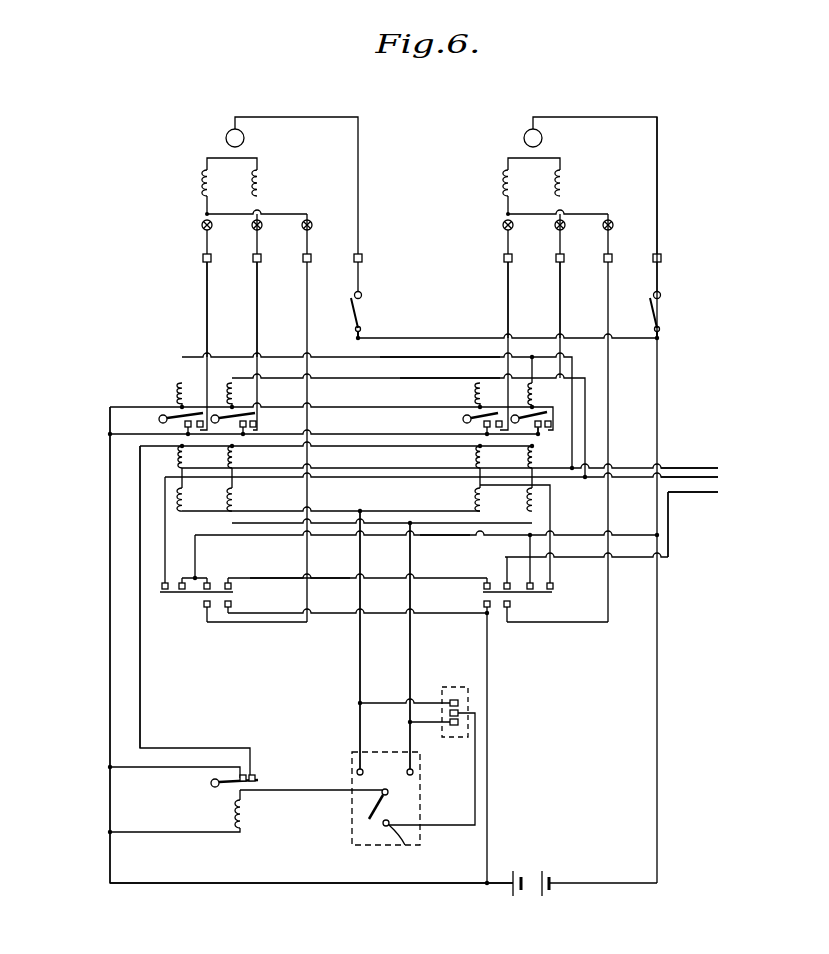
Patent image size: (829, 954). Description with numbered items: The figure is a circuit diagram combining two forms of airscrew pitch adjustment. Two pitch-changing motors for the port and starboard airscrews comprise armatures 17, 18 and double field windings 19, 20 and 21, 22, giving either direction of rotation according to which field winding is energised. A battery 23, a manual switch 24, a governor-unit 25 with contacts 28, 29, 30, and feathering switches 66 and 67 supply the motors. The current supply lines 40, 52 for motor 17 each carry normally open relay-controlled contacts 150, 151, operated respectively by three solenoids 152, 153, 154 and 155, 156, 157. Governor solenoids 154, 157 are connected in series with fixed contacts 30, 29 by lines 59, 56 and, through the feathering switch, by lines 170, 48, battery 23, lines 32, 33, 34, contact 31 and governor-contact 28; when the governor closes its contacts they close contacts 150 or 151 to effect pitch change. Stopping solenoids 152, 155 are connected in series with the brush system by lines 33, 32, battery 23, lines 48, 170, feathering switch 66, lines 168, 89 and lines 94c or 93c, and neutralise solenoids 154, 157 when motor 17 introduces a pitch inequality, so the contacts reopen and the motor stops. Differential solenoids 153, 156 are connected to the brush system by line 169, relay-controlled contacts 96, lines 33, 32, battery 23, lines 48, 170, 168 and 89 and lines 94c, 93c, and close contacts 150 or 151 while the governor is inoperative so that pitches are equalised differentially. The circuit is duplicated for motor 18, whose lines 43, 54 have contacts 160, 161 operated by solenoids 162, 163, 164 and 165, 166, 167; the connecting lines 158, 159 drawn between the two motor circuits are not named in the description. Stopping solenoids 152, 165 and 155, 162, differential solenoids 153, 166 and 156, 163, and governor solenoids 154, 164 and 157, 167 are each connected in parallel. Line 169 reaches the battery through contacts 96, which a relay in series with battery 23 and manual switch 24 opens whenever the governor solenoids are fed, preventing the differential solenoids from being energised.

The armature 17 is at (226, 134).
The armature 18 is at (524, 134).
The field winding 19 is at (203, 186).
The field winding 20 is at (262, 186).
The field winding 21 is at (504, 189).
The field winding 22 is at (565, 186).
The current supply line 40 is at (206, 297).
The current supply line 52 is at (257, 280).
The line 43 is at (506, 281).
The line 54 is at (560, 311).
The conductor 158 is at (390, 355).
The conductor 159 is at (430, 376).
The stopping solenoid 162 is at (478, 380).
The stopping solenoid 152 is at (180, 380).
The stopping solenoid 155 is at (232, 380).
The stopping solenoid 165 is at (537, 400).
The contacts 150 is at (173, 412).
The contacts 151 is at (262, 418).
The contacts 160 is at (470, 415).
The contacts 161 is at (550, 418).
The differential solenoid 153 is at (180, 460).
The differential solenoid 156 is at (236, 458).
The differential solenoid 163 is at (477, 458).
The differential solenoid 166 is at (503, 455).
The governor solenoid 154 is at (185, 506).
The governor solenoid 157 is at (237, 495).
The governor solenoid 164 is at (478, 505).
The governor solenoid 167 is at (538, 496).
The line 93c is at (624, 467).
The line 94c is at (636, 480).
The line 89 is at (668, 509).
The line 168 is at (301, 578).
The line 170 is at (454, 535).
The feathering switch 66 is at (190, 598).
The feathering switch 67 is at (533, 600).
The line 59 is at (359, 650).
The line 56 is at (411, 643).
The line 169 is at (140, 657).
The line 48 is at (656, 717).
The governor-unit 25 is at (448, 687).
The fixed contact 30 is at (460, 704).
The governor-contact 28 is at (460, 714).
The fixed contact 29 is at (460, 722).
The manual switch 24 is at (365, 806).
The contact 31 is at (392, 832).
The relay-controlled contacts 96 is at (258, 778).
The line 34 is at (291, 793).
The line 33 is at (112, 857).
The line 32 is at (330, 887).
The battery 23 is at (522, 890).